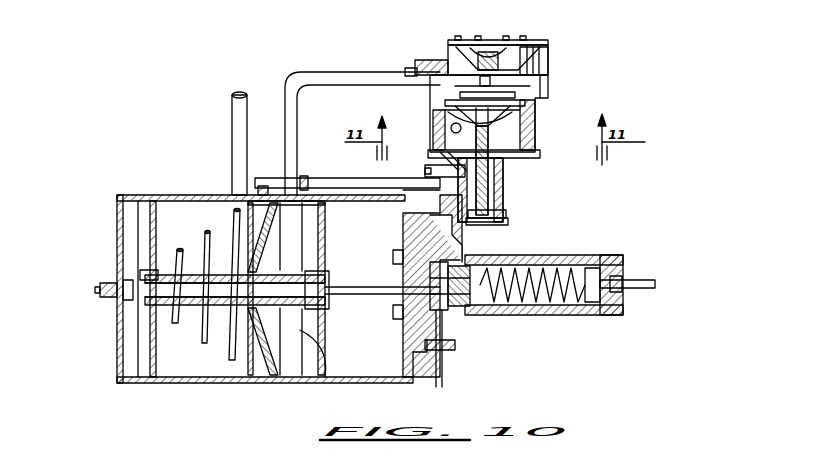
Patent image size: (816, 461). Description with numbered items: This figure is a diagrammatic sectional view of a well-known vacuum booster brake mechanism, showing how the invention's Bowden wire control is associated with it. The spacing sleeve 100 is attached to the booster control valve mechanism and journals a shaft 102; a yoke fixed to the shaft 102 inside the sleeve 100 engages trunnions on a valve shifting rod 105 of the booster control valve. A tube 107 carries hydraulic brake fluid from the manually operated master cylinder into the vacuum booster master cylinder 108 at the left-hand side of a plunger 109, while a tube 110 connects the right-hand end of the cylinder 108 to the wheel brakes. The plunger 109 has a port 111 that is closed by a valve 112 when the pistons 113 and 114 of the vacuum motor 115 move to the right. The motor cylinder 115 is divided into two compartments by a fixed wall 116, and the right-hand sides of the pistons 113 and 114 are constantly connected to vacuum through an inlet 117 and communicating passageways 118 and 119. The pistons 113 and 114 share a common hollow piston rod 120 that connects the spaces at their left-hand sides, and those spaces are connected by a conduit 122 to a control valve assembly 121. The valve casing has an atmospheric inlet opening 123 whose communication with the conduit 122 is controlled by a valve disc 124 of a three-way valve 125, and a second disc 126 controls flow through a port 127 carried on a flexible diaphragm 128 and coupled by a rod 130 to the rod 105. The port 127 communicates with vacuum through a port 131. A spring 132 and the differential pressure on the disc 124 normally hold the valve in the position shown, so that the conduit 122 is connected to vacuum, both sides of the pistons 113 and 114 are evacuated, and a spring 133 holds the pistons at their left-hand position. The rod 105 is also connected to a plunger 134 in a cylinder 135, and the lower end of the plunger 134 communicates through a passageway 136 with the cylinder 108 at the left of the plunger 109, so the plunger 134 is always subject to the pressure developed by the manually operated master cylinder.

The spacing sleeve 100 is at (535, 135).
The shaft 102 is at (440, 152).
The valve shifting rod 105 is at (490, 168).
The tube 107 is at (445, 372).
The vacuum booster master cylinder 108 is at (528, 310).
The plunger 109 is at (460, 312).
The tube 110 is at (638, 280).
The port 111 is at (455, 268).
The valve 112 is at (448, 338).
The piston 113 is at (160, 378).
The piston 114 is at (328, 378).
The vacuum motor 115 is at (196, 195).
The fixed wall 116 is at (258, 378).
The inlet 117 is at (232, 122).
The passageway 118 is at (368, 184).
The passageway 119 is at (420, 213).
The hollow piston rod 120 is at (214, 378).
The control valve assembly 121 is at (440, 51).
The conduit 122 is at (330, 72).
The atmospheric inlet opening 123 is at (548, 63).
The valve disc 124 is at (500, 62).
The three-way valve 125 is at (532, 83).
The second disc 126 is at (515, 94).
The port 127 is at (515, 125).
The flexible diaphragm 128 is at (448, 137).
The rod 130 is at (503, 155).
The port 131 is at (445, 171).
The spring 132 is at (468, 46).
The spring 133 is at (180, 260).
The plunger 134 is at (506, 212).
The cylinder 135 is at (508, 222).
The passageway 136 is at (430, 245).